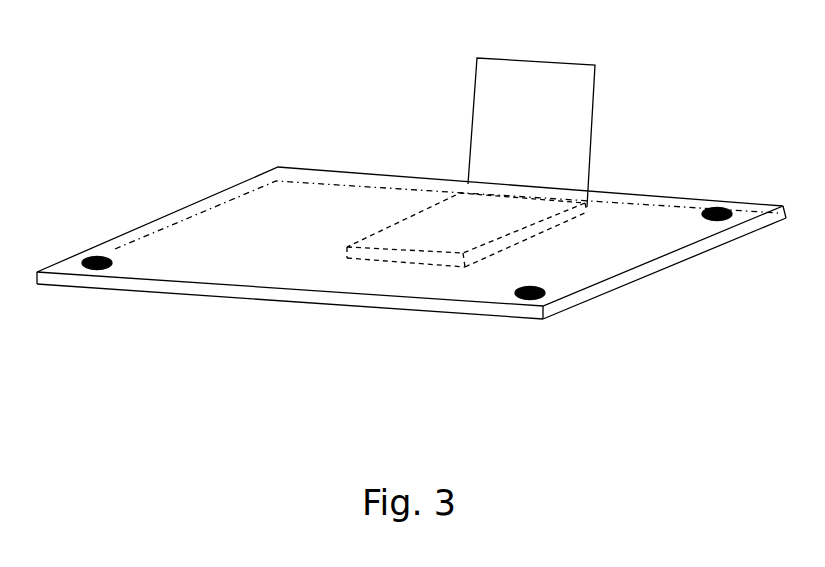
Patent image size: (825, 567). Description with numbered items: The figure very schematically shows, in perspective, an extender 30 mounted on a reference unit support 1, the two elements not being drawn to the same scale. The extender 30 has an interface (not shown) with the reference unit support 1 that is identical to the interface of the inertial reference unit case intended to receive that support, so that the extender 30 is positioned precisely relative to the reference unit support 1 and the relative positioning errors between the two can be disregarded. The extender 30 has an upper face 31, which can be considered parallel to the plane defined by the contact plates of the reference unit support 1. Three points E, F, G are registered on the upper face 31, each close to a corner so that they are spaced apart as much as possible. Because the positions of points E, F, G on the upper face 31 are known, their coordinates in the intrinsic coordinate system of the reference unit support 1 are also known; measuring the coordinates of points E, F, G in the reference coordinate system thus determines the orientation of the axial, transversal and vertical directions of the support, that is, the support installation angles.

The reference unit support 1 is at (609, 106).
The extender 30 is at (197, 272).
The upper face 31 is at (609, 261).
The point E is at (98, 257).
The point F is at (520, 300).
The point G is at (721, 206).